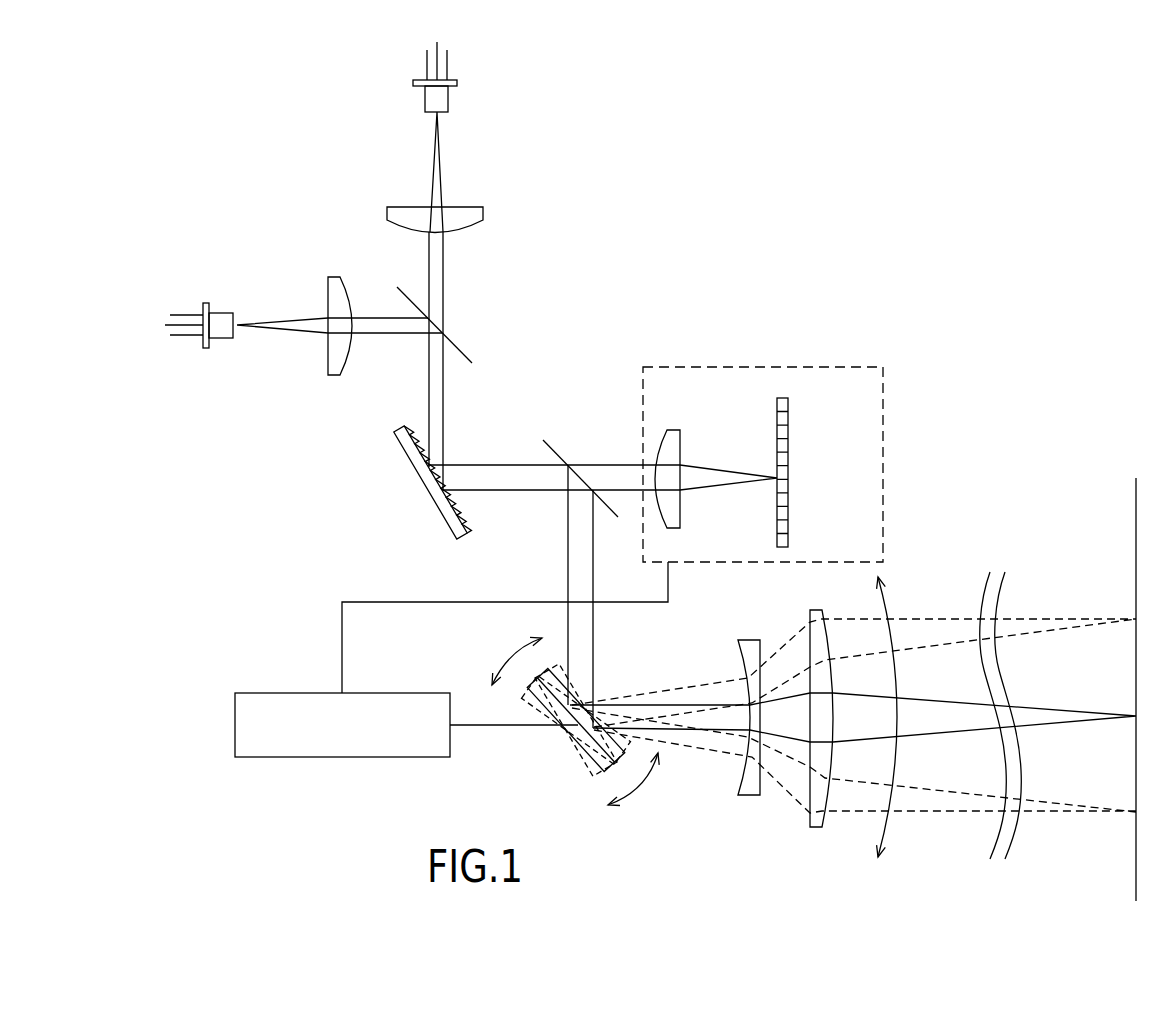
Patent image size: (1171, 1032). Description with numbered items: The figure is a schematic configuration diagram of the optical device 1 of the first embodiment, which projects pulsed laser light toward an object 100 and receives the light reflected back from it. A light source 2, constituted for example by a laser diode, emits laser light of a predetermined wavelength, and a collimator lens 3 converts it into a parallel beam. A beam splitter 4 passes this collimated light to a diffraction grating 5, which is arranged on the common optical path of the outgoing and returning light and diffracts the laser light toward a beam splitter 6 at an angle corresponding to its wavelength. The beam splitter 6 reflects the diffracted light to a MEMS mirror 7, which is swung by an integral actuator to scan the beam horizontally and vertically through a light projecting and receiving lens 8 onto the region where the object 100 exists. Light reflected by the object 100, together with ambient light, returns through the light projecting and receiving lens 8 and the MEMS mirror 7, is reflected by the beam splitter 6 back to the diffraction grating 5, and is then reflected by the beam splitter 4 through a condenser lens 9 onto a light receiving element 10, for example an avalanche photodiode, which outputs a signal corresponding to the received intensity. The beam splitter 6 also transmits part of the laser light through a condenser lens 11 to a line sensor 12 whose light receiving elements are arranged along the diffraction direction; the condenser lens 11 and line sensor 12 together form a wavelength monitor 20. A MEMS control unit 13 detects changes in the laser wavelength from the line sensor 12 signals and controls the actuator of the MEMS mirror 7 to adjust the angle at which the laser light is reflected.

The optical device 1 is at (750, 195).
The light source 2 is at (449, 97).
The collimator lens 3 is at (485, 210).
The beam splitter 4 is at (463, 352).
The diffraction grating 5 is at (431, 497).
The beam splitter 6 is at (558, 452).
The MEMS mirror 7 is at (593, 752).
The light projecting and receiving lens 8 is at (825, 609).
The condenser lens 9 is at (333, 277).
The light receiving element 10 is at (219, 313).
The condenser lens 11 is at (676, 430).
The line sensor 12 is at (791, 422).
The MEMS control unit 13 is at (268, 693).
The wavelength monitor 20 is at (885, 397).
The object 100 is at (1137, 495).